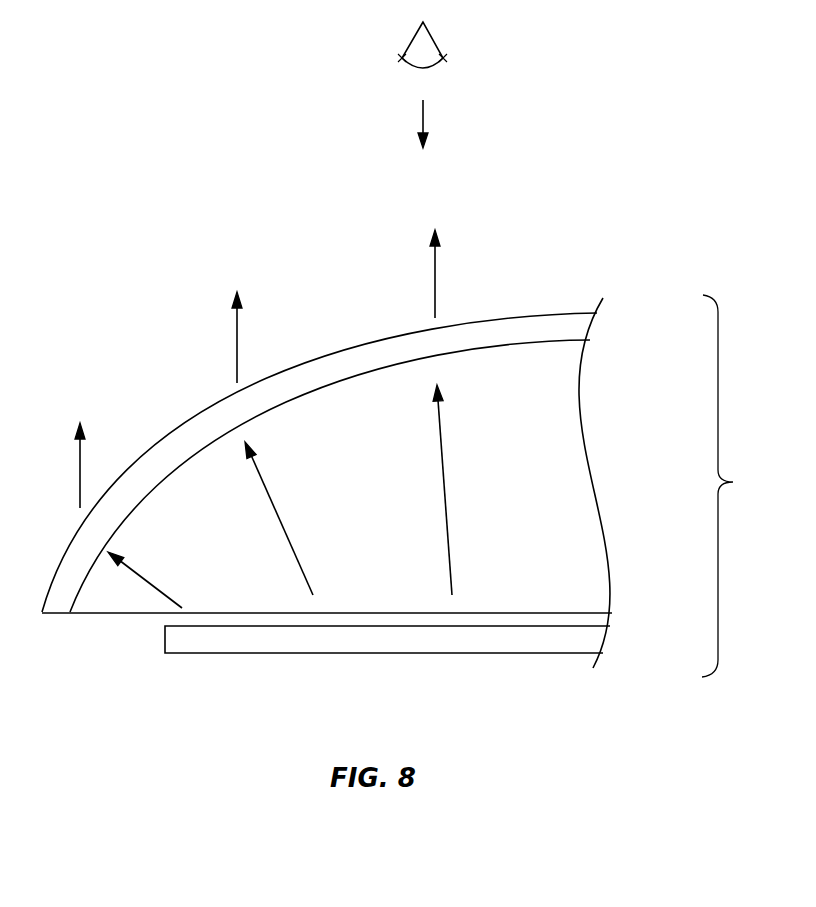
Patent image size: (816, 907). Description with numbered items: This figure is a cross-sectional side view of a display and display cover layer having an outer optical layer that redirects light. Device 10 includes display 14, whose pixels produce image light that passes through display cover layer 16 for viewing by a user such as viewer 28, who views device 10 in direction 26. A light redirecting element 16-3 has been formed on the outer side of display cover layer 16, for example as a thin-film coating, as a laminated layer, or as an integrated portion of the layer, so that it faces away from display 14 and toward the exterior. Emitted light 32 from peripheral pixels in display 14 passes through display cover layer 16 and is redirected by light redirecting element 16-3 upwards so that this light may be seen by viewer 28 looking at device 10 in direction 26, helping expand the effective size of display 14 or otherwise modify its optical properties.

The device 10 is at (729, 486).
The display 14 is at (373, 639).
The display cover layer 16 is at (568, 492).
The light redirecting element 16-3 is at (568, 331).
The direction 26 is at (423, 120).
The viewer 28 is at (435, 38).
The emitted light 32 is at (80, 450).